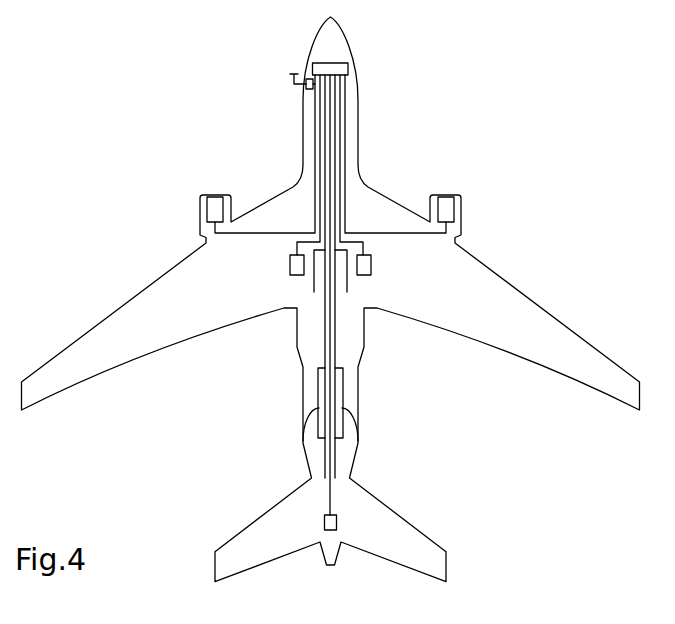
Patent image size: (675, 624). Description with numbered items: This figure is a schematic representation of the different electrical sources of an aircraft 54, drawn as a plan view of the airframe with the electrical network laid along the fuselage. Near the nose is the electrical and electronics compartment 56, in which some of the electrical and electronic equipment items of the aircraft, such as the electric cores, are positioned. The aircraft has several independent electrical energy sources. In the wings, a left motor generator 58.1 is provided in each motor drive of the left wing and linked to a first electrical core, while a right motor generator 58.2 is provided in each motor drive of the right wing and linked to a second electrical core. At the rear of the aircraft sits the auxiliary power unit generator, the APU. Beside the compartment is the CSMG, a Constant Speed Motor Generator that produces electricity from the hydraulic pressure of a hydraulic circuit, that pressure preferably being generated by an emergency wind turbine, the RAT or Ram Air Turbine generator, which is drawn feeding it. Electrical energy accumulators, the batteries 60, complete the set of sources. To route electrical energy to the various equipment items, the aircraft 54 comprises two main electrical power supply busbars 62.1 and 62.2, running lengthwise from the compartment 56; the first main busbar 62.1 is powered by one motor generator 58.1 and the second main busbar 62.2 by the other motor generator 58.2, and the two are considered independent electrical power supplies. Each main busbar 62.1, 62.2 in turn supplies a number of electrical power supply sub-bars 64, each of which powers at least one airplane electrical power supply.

The aircraft 54 is at (373, 78).
The electrical and electronics compartment 56 is at (338, 62).
The left motor generator 58.1 is at (213, 195).
The right motor generator 58.2 is at (448, 195).
The batteries 60 is at (296, 278).
The first main electrical power supply busbar 62.1 is at (318, 152).
The second main electrical power supply busbar 62.2 is at (341, 153).
The electrical power supply sub-bars 64 is at (314, 292).
The Ram Air Turbine generator RAT is at (287, 78).
The Constant Speed Motor Generator CSMG is at (303, 90).
The auxiliary power unit generator APU is at (332, 533).